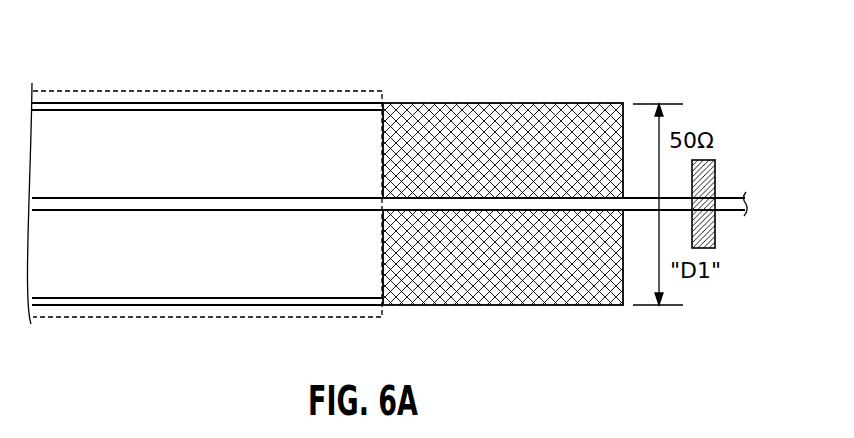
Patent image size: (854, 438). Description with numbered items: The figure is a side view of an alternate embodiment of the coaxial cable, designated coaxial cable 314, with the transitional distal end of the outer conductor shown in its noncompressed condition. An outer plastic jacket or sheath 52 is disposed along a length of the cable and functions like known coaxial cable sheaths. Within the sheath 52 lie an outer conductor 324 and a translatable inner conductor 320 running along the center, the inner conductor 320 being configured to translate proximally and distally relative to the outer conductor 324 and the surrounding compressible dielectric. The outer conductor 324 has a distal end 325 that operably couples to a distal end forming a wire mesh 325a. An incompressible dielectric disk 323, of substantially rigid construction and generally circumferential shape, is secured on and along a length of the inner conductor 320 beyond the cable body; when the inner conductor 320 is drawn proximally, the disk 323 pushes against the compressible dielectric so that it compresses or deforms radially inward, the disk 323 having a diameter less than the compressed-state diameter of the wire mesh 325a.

The sheath 52 is at (185, 91).
The outer conductor 324 is at (287, 110).
The inner conductor 320 is at (726, 197).
The distal end 325 is at (483, 98).
The wire mesh 325a is at (571, 117).
The coaxial cable 314 is at (429, 65).
The incompressible dielectric disk 323 is at (715, 230).